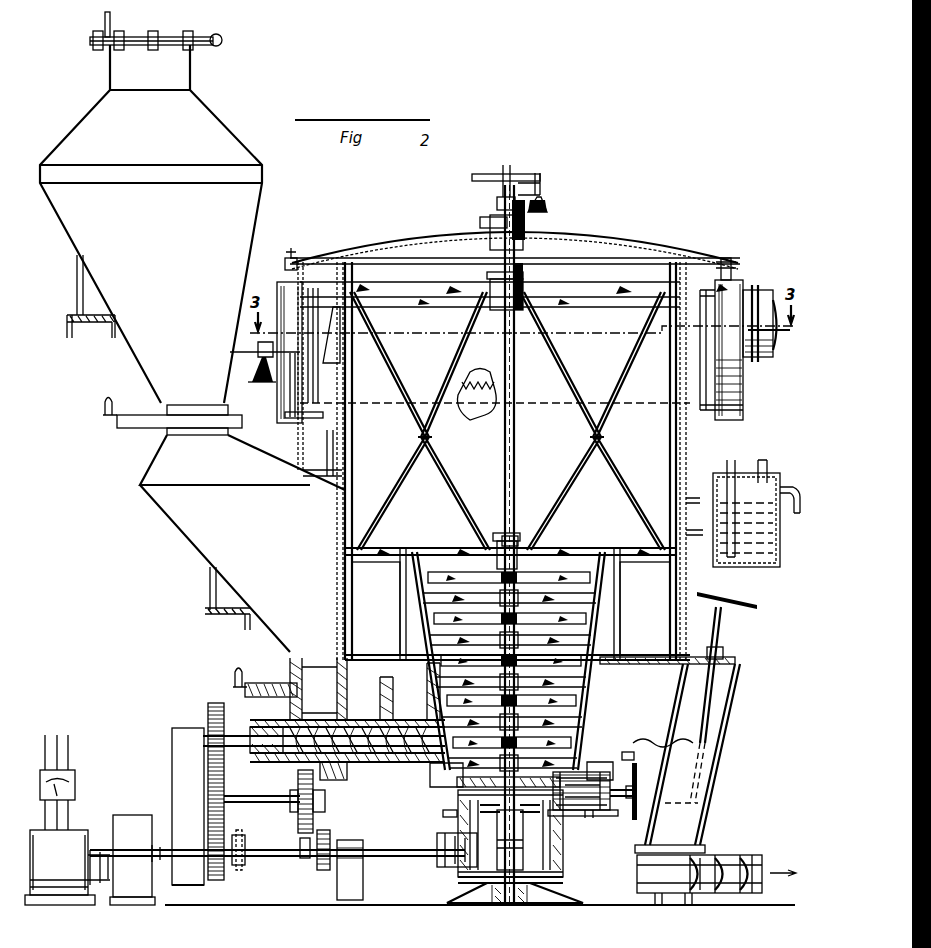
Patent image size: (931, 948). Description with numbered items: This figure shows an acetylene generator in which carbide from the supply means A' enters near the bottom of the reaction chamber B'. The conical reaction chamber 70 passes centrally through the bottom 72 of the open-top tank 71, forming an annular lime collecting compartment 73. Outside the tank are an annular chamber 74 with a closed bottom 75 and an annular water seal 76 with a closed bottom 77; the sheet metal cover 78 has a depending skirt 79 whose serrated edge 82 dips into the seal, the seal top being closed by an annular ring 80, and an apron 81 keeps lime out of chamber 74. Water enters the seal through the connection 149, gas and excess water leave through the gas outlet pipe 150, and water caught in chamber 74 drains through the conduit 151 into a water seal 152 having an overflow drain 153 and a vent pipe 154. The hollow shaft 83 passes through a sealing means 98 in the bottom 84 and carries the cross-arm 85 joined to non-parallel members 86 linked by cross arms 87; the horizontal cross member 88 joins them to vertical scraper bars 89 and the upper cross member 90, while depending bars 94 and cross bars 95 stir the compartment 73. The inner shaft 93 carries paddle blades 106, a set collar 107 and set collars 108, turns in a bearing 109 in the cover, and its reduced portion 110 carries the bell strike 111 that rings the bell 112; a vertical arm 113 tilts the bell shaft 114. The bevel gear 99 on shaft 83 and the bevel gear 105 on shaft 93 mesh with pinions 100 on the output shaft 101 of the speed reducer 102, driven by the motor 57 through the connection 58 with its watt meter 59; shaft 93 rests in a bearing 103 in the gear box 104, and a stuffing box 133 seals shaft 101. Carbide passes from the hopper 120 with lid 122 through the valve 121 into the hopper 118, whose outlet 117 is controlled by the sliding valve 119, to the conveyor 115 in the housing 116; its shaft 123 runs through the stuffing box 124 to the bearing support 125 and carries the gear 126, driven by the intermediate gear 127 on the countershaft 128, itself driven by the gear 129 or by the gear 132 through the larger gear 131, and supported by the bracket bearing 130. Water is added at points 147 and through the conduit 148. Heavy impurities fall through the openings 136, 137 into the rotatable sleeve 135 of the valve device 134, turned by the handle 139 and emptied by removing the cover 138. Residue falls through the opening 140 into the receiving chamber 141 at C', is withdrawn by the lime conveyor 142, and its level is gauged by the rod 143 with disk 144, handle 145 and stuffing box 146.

The electric motor 57 is at (75, 830).
The connection 58 is at (70, 756).
The watt meter 59 is at (76, 782).
The reaction chamber 70 is at (414, 598).
The upper chamber 71 is at (690, 586).
The bottom 72 is at (386, 667).
The annular lime collecting compartment 73 is at (357, 621).
The annular open top chamber 74 is at (328, 440).
The bracket plate 75 is at (337, 460).
The annular water seal chamber 76 is at (288, 410).
The closed bottom 77 is at (290, 422).
The sheet metal cover 78 is at (635, 250).
The depending cylindrical skirt portion 79 is at (744, 386).
The annular ring 80 is at (285, 282).
The apron or baffle 81 is at (342, 357).
The serrated lower edge 82 is at (462, 392).
The outer hollow shaft 83 is at (562, 860).
The bottom 84 is at (457, 792).
The cross-arm 85 is at (590, 722).
The upwardly extending non-parallel members 86 is at (440, 693).
The spaced cross arms 87 is at (446, 640).
The horizontal cross member 88 is at (466, 545).
The vertical scraper bars 89 is at (353, 463).
The upper cross member 90 is at (605, 290).
The shaft 93 is at (504, 468).
The depending bars 94 is at (626, 600).
The cross bars 95 is at (660, 651).
The sealing means 98 is at (443, 813).
The bevel gear 99 is at (564, 840).
The pinion bevel gears 100 is at (476, 888).
The power output shaft 101 is at (260, 850).
The speed reducer 102 is at (120, 816).
The bearing 103 is at (512, 896).
The gear box 104 is at (490, 896).
The bevel gear 105 is at (556, 870).
The paddle blades 106 is at (580, 575).
The set collar 107 is at (530, 530).
The set collars 108 is at (538, 289).
The bearing 109 is at (540, 236).
The reduced portion 110 is at (502, 190).
The cross arm bell strike 111 is at (485, 176).
The bell 112 is at (548, 208).
The vertical arm 113 is at (275, 385).
The bell shaft 114 is at (256, 352).
The conveyor 115 is at (396, 756).
The housing 116 is at (340, 713).
The outlet 117 is at (245, 696).
The carbide hopper 118 is at (192, 540).
The sliding type of valve 119 is at (266, 685).
The second carbide supply hopper 120 is at (236, 128).
The second carbide valve 121 is at (140, 416).
The lid 122 is at (165, 37).
The shaft 123 is at (249, 745).
The stuffing box 124 is at (258, 727).
The bearing support 125 is at (174, 738).
The gear 126 is at (207, 710).
The intermediate gear 127 is at (207, 778).
The countershaft 128 is at (246, 802).
The gear 129 is at (223, 882).
The bracket bearing 130 is at (326, 790).
The larger intermediate gear 131 is at (297, 785).
The smaller gear 132 is at (310, 876).
The stuffing box 133 is at (440, 856).
The valve device 134 is at (635, 795).
The rotatable sleeve 135 is at (613, 813).
The opening 136 is at (588, 738).
The opening 137 is at (586, 810).
The cover 138 is at (630, 781).
The handle 139 is at (638, 810).
The opening 140 is at (655, 664).
The receiving chamber 141 is at (727, 703).
The lime conveyor 142 is at (712, 852).
The rod 143 is at (722, 640).
The disk 144 is at (700, 805).
The handle 145 is at (740, 607).
The stuffing box 146 is at (725, 660).
The points 147 is at (432, 767).
The conduit 148 is at (382, 690).
The connection 149 is at (740, 276).
The gas outlet pipe 150 is at (766, 357).
The drain conduit 151 is at (735, 455).
The water seal 152 is at (745, 568).
The overflow drain 153 is at (797, 487).
The vent pipe 154 is at (766, 460).
The carbide supply means A' is at (115, 465).
The reaction chamber B' is at (624, 683).
The discharge section C' is at (728, 777).